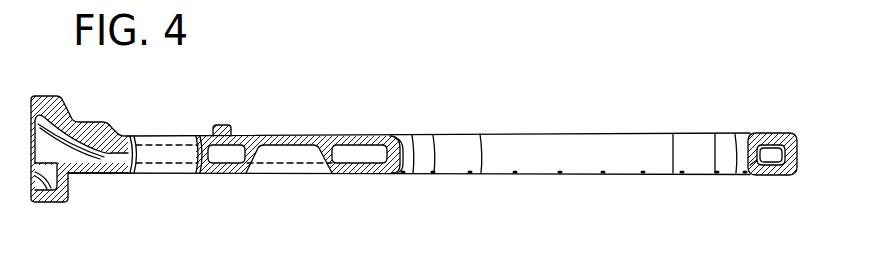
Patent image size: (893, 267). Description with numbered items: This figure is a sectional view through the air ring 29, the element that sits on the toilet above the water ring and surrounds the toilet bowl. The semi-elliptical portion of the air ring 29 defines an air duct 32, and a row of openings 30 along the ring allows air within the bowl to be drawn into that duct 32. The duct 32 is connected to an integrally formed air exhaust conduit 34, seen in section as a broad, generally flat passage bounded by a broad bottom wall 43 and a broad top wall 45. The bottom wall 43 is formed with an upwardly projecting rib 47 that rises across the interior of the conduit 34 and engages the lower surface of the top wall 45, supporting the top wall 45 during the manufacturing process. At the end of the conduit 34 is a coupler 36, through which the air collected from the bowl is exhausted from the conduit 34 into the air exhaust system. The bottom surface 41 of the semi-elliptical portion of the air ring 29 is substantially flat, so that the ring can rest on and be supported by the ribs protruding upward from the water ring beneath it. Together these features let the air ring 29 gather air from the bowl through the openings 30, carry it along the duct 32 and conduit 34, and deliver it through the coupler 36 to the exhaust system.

The air ring 29 is at (498, 132).
The openings 30 is at (515, 173).
The air duct 32 is at (773, 152).
The air exhaust conduit 34 is at (357, 155).
The coupler 36 is at (40, 202).
The bottom surface 41 is at (783, 178).
The bottom wall 43 is at (223, 172).
The top wall 45 is at (285, 133).
The rib 47 is at (290, 155).